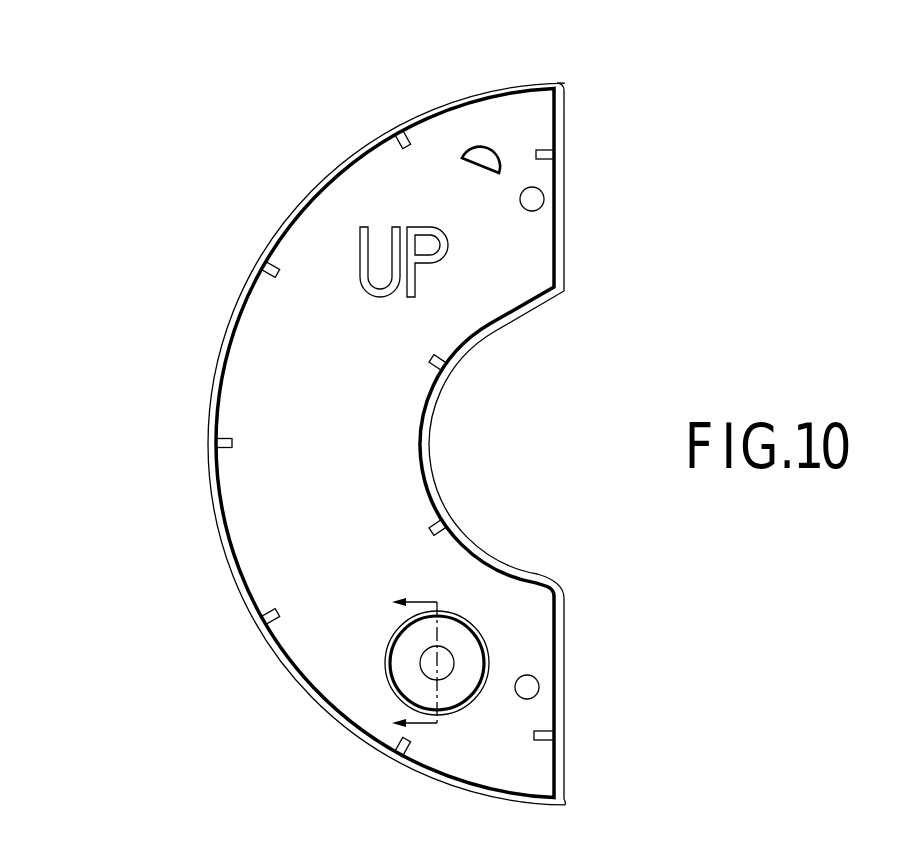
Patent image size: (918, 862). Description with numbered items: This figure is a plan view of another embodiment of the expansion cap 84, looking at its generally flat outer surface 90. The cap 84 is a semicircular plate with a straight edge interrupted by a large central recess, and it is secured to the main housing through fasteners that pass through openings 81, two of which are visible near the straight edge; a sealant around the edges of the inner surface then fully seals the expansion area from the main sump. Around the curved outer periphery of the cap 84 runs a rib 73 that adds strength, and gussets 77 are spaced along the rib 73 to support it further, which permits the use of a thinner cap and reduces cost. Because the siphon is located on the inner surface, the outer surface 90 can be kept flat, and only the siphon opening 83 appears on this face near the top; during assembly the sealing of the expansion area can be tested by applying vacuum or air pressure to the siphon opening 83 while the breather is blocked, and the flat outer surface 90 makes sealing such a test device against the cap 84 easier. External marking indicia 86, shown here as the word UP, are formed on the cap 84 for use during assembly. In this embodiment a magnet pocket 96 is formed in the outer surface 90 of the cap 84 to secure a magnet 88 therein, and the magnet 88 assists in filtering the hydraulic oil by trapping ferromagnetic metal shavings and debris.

The expansion cap 84 is at (208, 301).
The rib 73 is at (293, 672).
The outer surface 90 is at (303, 458).
The gussets 77 is at (266, 609).
The siphon opening 83 is at (489, 160).
The openings 81 is at (536, 197).
The external marking indicia 86 is at (358, 232).
The magnet 88 is at (456, 638).
The magnet pocket 96 is at (456, 717).